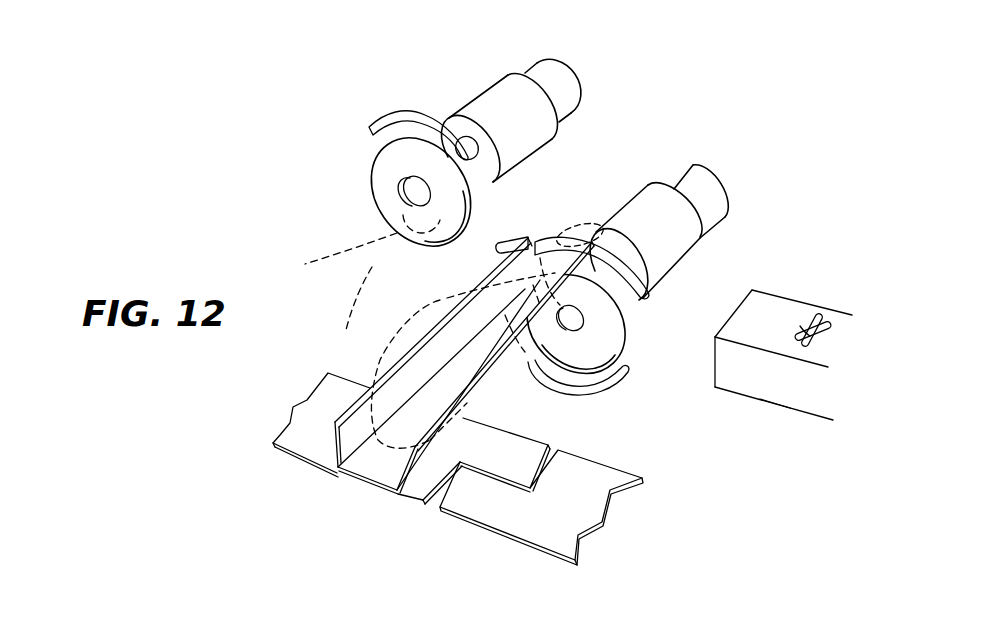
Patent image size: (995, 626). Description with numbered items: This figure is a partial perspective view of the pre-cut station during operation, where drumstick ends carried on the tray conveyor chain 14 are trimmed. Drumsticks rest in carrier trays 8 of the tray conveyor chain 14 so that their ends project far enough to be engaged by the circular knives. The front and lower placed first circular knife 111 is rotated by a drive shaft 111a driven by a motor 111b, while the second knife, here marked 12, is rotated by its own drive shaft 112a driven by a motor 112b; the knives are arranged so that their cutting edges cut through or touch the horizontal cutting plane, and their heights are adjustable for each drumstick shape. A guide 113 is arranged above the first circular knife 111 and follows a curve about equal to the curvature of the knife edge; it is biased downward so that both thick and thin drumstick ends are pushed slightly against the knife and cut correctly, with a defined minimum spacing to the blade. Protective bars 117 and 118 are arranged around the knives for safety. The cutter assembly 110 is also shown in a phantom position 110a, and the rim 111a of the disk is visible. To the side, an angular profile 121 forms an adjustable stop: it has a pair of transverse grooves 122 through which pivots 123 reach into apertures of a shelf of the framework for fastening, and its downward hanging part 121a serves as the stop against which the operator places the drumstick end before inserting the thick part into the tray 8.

The carrier tray 8 is at (382, 463).
The upper cutter disk 12 is at (385, 178).
The tray conveyor chain 14 is at (470, 510).
The cutter unit 110 is at (657, 387).
The cutter position (phantom) 110a is at (572, 229).
The first circular knife 111 is at (610, 322).
The drive shaft 111a is at (622, 352).
The motor 111b is at (705, 175).
The drive shaft 112a is at (425, 198).
The motor 112b is at (563, 80).
The guide 113 is at (640, 275).
The protective bar 117 is at (413, 125).
The protective bar 118 is at (560, 390).
The angular profile 121 is at (740, 318).
The part of the angular profile 121a is at (807, 393).
The transverse groove 122 is at (822, 322).
The pivot 123 is at (797, 322).